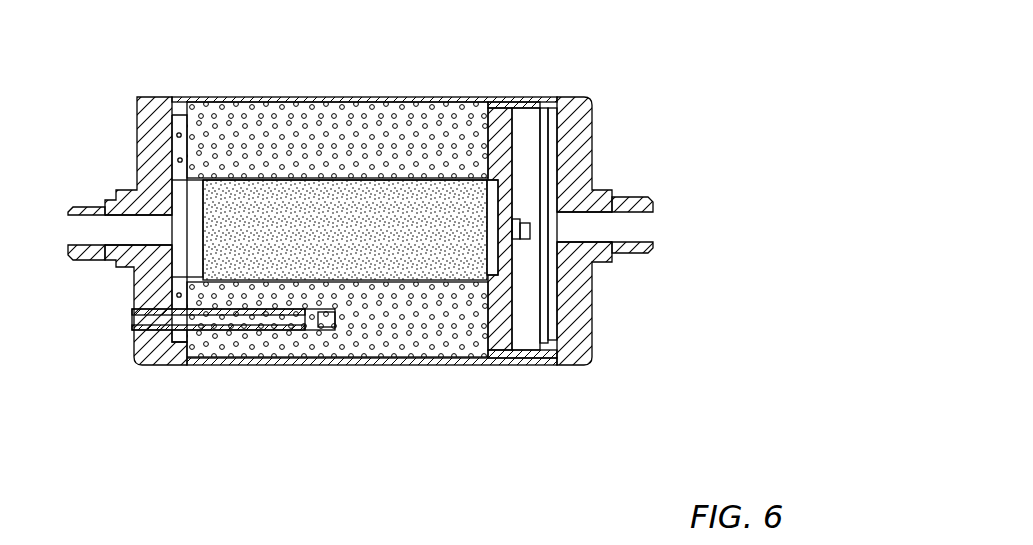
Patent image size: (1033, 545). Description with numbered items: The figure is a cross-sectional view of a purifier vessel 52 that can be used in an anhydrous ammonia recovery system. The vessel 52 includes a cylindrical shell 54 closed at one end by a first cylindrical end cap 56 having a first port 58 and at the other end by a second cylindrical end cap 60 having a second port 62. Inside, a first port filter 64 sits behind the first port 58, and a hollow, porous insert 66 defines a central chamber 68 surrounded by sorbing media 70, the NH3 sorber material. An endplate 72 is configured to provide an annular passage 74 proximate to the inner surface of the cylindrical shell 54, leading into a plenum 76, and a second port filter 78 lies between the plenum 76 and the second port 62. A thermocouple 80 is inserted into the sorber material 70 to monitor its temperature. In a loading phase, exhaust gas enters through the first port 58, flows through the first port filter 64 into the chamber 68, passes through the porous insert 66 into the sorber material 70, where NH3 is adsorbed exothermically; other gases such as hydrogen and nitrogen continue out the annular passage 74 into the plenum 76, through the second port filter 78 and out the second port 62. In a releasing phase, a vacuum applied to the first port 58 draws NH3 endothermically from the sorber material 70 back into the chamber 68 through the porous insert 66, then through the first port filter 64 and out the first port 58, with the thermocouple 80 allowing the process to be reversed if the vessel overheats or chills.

The purifier vessel 52 is at (647, 85).
The cylindrical shell 54 is at (275, 97).
The first cylindrical end cap 56 is at (146, 128).
The first port 58 is at (76, 228).
The second cylindrical end cap 60 is at (585, 132).
The second port 62 is at (647, 223).
The first port filter 64 is at (179, 255).
The hollow porous insert 66 is at (372, 180).
The chamber 68 is at (340, 231).
The sorbing media 70 is at (352, 142).
The endplate 72 is at (497, 108).
The annular passage 74 is at (512, 103).
The plenum 76 is at (524, 112).
The second port filter 78 is at (545, 310).
The thermocouple 80 is at (143, 318).